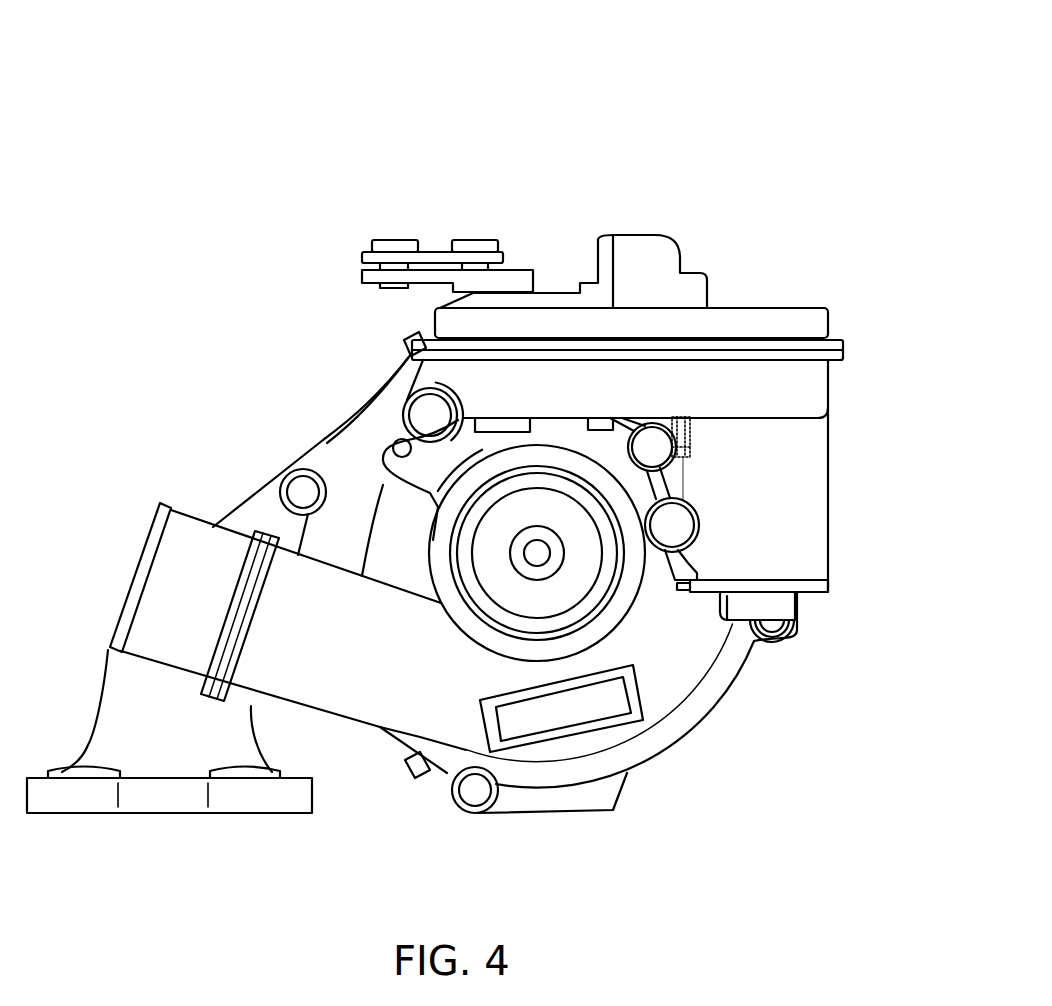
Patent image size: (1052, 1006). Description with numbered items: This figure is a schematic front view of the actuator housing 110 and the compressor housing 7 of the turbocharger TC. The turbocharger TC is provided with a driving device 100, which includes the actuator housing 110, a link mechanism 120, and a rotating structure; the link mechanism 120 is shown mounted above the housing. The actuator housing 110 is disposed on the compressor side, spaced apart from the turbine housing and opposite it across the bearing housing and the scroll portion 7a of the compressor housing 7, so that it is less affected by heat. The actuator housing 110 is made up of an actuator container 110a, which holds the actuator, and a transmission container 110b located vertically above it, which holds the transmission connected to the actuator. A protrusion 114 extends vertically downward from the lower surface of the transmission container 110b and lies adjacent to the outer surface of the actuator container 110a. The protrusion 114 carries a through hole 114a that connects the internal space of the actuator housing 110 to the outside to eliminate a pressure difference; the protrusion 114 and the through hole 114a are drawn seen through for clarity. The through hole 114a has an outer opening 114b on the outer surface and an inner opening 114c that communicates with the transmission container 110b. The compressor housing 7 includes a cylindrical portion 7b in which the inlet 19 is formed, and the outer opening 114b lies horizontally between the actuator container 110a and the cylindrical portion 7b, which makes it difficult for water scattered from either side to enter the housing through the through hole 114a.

The turbocharger TC is at (245, 64).
The driving device 100 is at (340, 140).
The link mechanism 120 is at (425, 227).
The actuator housing 110 is at (773, 308).
The actuator container 110a is at (828, 492).
The transmission container 110b is at (826, 320).
The protrusion 114 is at (693, 442).
The through hole 114a is at (690, 430).
The outer opening 114b is at (692, 467).
The inner opening 114c is at (673, 418).
The inlet 19 is at (608, 545).
The compressor housing 7 is at (707, 720).
The scroll portion 7a is at (677, 632).
The cylindrical portion 7b is at (607, 560).